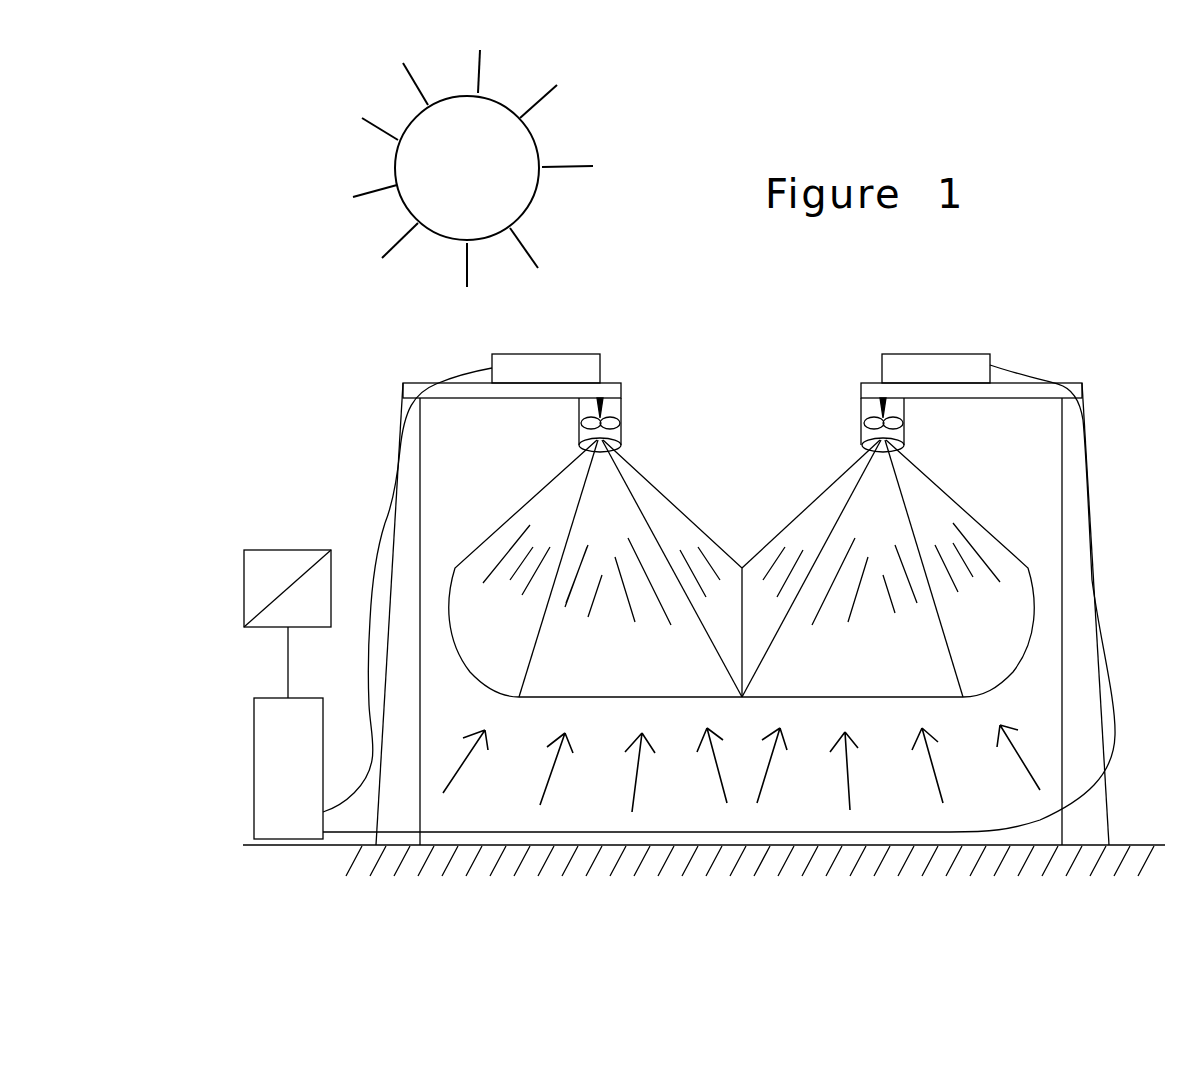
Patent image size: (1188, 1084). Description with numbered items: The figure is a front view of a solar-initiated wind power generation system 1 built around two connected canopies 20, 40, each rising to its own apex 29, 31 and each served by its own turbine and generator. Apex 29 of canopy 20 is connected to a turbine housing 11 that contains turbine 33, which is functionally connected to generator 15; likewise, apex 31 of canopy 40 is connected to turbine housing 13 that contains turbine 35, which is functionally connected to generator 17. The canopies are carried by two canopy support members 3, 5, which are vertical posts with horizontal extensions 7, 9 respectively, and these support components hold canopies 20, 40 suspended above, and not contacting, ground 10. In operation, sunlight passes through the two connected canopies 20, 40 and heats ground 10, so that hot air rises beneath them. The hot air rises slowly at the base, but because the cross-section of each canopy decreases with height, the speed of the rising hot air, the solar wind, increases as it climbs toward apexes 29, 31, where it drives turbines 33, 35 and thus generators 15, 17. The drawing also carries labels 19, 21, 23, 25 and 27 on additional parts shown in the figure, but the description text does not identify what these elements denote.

The solar-initiated wind power generation system 1 is at (744, 372).
The canopy support member 3 is at (408, 494).
The canopy support member 5 is at (1075, 490).
The horizontal extension 7 is at (463, 397).
The horizontal extension 9 is at (1020, 398).
The ground 10 is at (588, 845).
The left fan housing 11 is at (624, 415).
The turbine housing 13 is at (862, 410).
The generator 15 is at (576, 354).
The generator 17 is at (905, 354).
The left supply conduit 19 is at (385, 523).
The canopy 20 is at (655, 490).
The right supply conduit 21 is at (1088, 529).
The salt water source S1 23 is at (265, 698).
The power generator / distribution unit 25 is at (277, 550).
The collection surface 27 is at (662, 697).
The apex 29 is at (580, 447).
The apex 31 is at (905, 447).
The turbine 33 is at (623, 424).
The turbine 35 is at (861, 425).
The canopy 40 is at (828, 490).